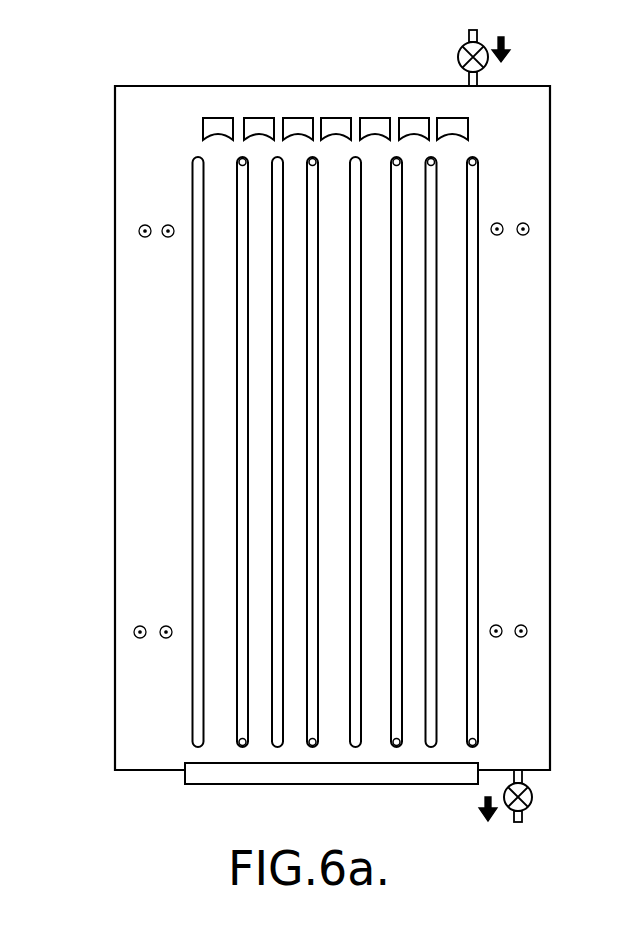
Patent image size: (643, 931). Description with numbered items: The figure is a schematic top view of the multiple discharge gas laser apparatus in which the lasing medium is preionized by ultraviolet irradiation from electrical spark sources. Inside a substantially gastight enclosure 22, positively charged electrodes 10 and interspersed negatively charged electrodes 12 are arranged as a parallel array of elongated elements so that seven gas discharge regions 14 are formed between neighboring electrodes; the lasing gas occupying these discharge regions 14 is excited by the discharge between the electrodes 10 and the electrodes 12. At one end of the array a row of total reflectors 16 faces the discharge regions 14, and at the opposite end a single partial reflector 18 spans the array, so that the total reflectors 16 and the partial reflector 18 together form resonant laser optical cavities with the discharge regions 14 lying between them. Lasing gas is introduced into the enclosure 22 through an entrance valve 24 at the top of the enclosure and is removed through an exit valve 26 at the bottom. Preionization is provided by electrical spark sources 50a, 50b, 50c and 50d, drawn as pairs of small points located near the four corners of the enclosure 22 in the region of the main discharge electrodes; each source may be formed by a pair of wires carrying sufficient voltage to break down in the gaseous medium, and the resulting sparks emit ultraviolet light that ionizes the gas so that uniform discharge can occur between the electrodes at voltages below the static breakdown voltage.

The positively charged electrodes 10 is at (308, 717).
The negatively charged electrodes 12 is at (273, 547).
The gas discharge regions 14 is at (335, 234).
The total reflectors 16 is at (293, 118).
The partial reflector 18 is at (185, 785).
The enclosure 22 is at (547, 470).
The entrance valve 24 is at (458, 50).
The exit valve 26 is at (533, 805).
The electrical spark source 50a is at (138, 228).
The electrical spark source 50b is at (137, 627).
The electrical spark source 50c is at (527, 217).
The electrical spark source 50d is at (512, 626).